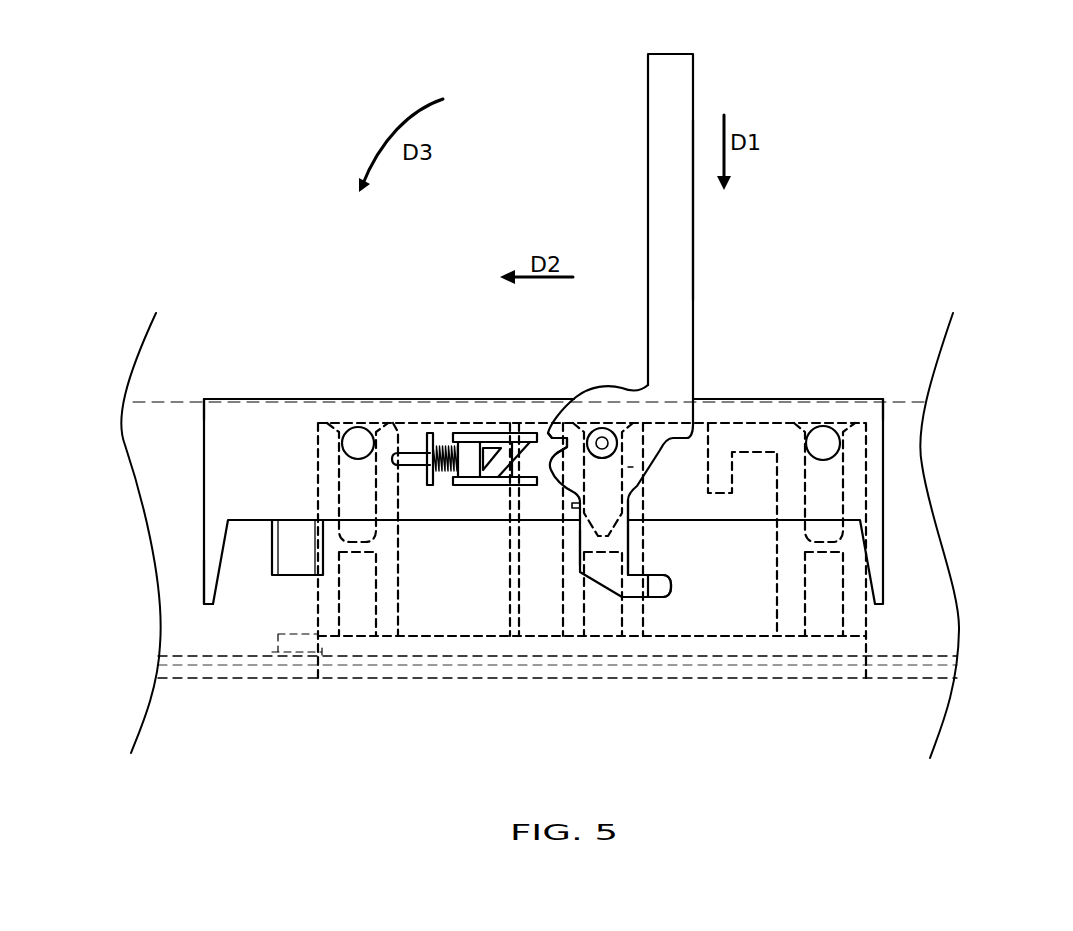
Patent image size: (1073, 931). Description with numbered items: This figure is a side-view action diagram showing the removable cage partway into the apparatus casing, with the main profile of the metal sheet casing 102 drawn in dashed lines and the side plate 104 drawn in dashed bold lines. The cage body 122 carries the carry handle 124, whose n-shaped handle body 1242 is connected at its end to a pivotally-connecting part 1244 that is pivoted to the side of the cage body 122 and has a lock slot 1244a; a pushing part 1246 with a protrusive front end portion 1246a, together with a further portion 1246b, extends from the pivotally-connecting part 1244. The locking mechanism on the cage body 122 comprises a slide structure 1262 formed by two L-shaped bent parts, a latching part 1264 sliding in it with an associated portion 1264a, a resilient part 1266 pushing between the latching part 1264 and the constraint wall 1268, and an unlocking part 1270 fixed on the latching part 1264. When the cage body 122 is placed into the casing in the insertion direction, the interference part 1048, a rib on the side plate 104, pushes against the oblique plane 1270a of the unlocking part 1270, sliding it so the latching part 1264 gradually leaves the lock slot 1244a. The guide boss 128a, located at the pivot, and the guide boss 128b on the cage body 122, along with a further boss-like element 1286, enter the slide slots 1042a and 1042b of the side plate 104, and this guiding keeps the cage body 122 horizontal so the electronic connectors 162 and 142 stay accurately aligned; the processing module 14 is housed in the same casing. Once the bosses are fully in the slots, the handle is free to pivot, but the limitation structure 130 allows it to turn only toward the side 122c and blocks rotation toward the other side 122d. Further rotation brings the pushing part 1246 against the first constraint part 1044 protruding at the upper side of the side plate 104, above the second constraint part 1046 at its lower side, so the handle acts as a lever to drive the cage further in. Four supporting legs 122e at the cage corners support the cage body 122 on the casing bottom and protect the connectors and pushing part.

The metal sheet casing 102 is at (906, 402).
The side plate 104 is at (867, 617).
The slide slot 1042a is at (607, 540).
The slide slot 1042b is at (356, 545).
The first constraint part 1044 is at (753, 458).
The second constraint part 1046 is at (680, 632).
The interference part 1048 is at (506, 506).
The cage body 122 is at (303, 410).
The side of the cage body 122c is at (228, 398).
The another side of the cage body 122d is at (865, 397).
The supporting leg 122e is at (205, 553).
The carry handle 124 is at (708, 55).
The handle body 1242 is at (688, 233).
The pivotally-connecting part 1244 is at (612, 396).
The lock slot 1244a is at (558, 432).
The pushing part 1246 is at (630, 540).
The protrusive front end portion 1246a is at (670, 585).
The inner surface of hook arm 1246b is at (593, 537).
The guide boss 128a is at (612, 441).
The guide boss 128b is at (823, 436).
The third pivot 1286 is at (356, 432).
The slide structure 1262 is at (510, 433).
The latching part 1264 is at (470, 450).
The guide rod 1264a is at (416, 462).
The resilient part 1266 is at (447, 447).
The constraint wall 1268 is at (428, 433).
The unlocking part 1270 is at (487, 460).
The oblique plane 1270a is at (520, 470).
The limitation structure 130 is at (574, 510).
The processing module 14 is at (180, 656).
The electronic connector 142 is at (275, 634).
The electronic connector 162 is at (288, 560).